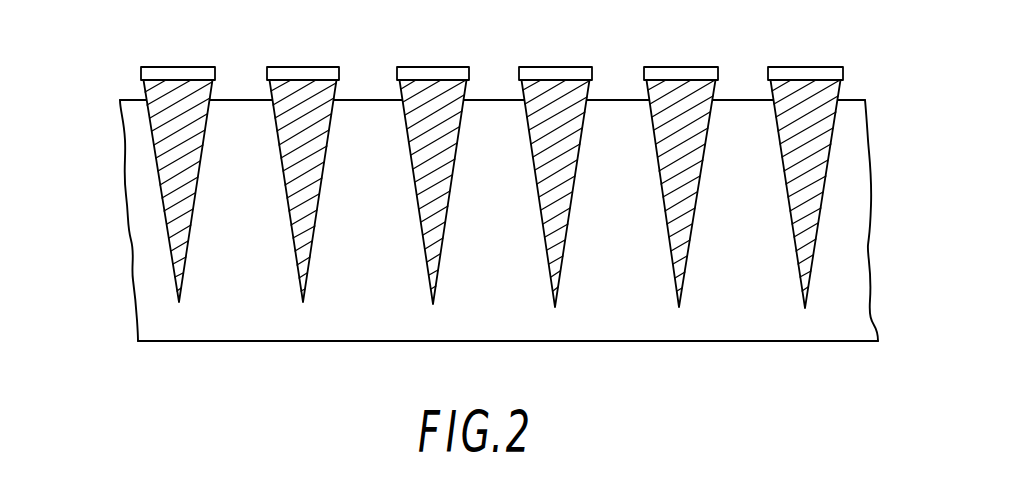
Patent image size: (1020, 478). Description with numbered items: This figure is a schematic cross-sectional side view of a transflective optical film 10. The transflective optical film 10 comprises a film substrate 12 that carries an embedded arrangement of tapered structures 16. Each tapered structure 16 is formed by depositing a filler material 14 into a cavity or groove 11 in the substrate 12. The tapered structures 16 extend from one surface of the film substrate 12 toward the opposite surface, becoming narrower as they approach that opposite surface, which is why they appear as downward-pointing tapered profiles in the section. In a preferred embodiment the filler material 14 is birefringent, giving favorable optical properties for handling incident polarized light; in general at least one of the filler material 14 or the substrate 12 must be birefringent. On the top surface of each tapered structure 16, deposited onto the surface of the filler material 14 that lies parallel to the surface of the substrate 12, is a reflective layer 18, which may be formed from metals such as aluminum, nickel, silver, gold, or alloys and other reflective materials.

The transflective optical film 10 is at (455, 191).
The cavity or groove 11 is at (291, 231).
The film substrate 12 is at (782, 318).
The filler material 14 is at (672, 205).
The tapered structure 16 is at (540, 212).
The reflective layer 18 is at (813, 68).